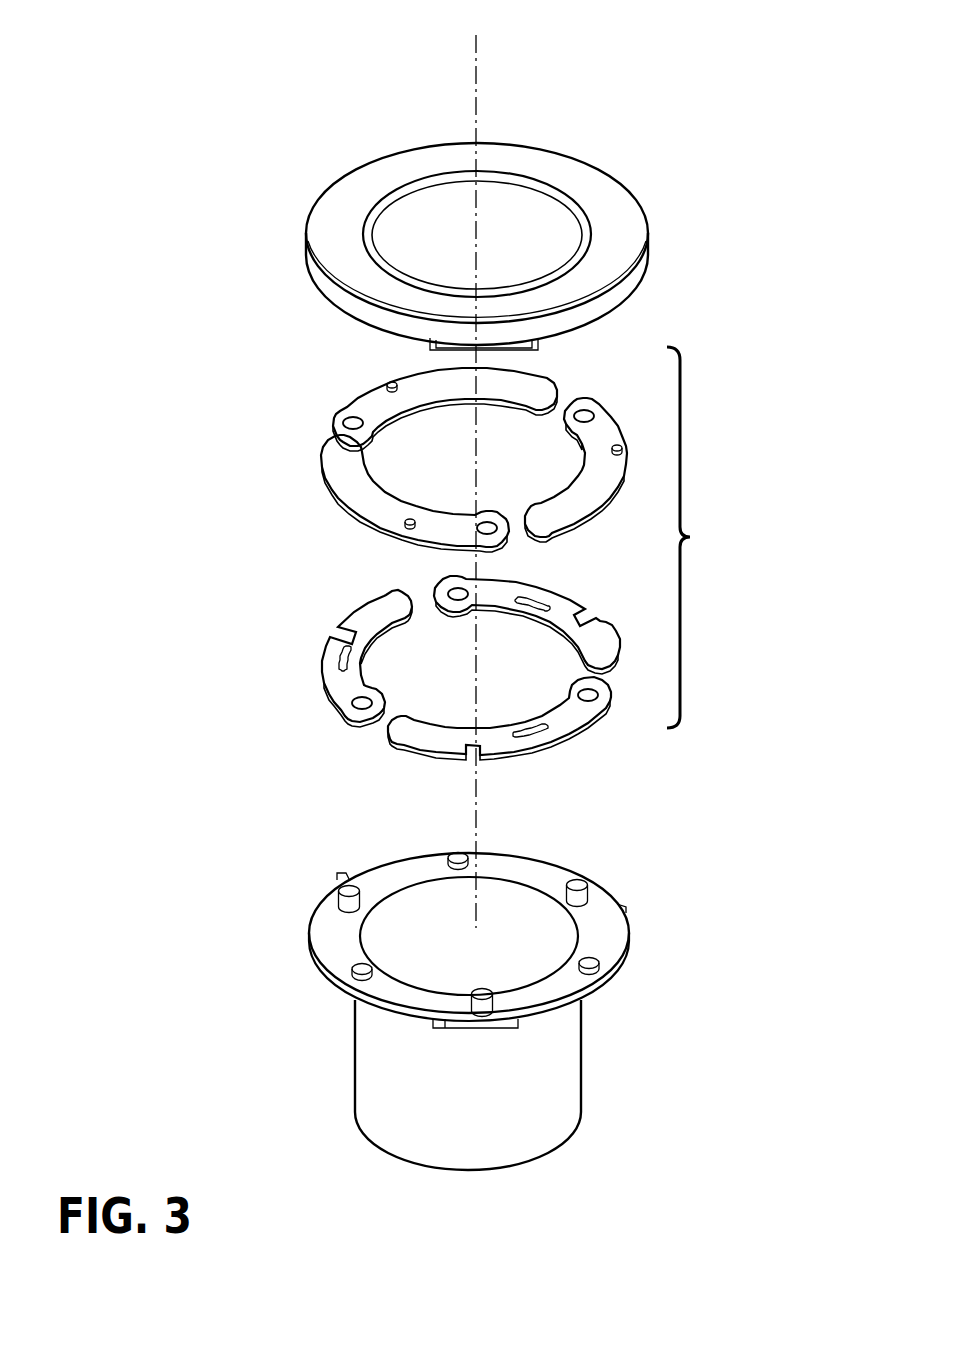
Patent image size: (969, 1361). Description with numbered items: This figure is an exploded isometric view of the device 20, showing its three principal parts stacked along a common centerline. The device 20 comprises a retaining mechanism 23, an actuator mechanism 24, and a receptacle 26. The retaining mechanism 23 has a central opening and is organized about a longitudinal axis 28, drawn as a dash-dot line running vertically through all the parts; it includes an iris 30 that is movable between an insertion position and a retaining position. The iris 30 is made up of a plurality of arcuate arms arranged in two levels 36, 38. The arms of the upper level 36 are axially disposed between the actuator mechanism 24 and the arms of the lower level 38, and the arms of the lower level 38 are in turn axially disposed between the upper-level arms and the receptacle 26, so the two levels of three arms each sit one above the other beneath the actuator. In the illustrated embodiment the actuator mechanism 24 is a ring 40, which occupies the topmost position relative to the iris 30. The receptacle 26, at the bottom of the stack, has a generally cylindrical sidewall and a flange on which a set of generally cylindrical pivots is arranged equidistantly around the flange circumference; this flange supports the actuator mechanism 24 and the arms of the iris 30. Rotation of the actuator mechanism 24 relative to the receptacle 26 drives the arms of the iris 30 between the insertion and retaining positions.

The device 20 is at (150, 100).
The longitudinal axis 28 is at (477, 90).
The actuator mechanism 24 is at (519, 231).
The ring 40 is at (357, 162).
The retaining mechanism 23 is at (716, 537).
The iris 30 is at (716, 537).
The level 36 is at (402, 459).
The level 38 is at (396, 676).
The receptacle 26 is at (470, 999).